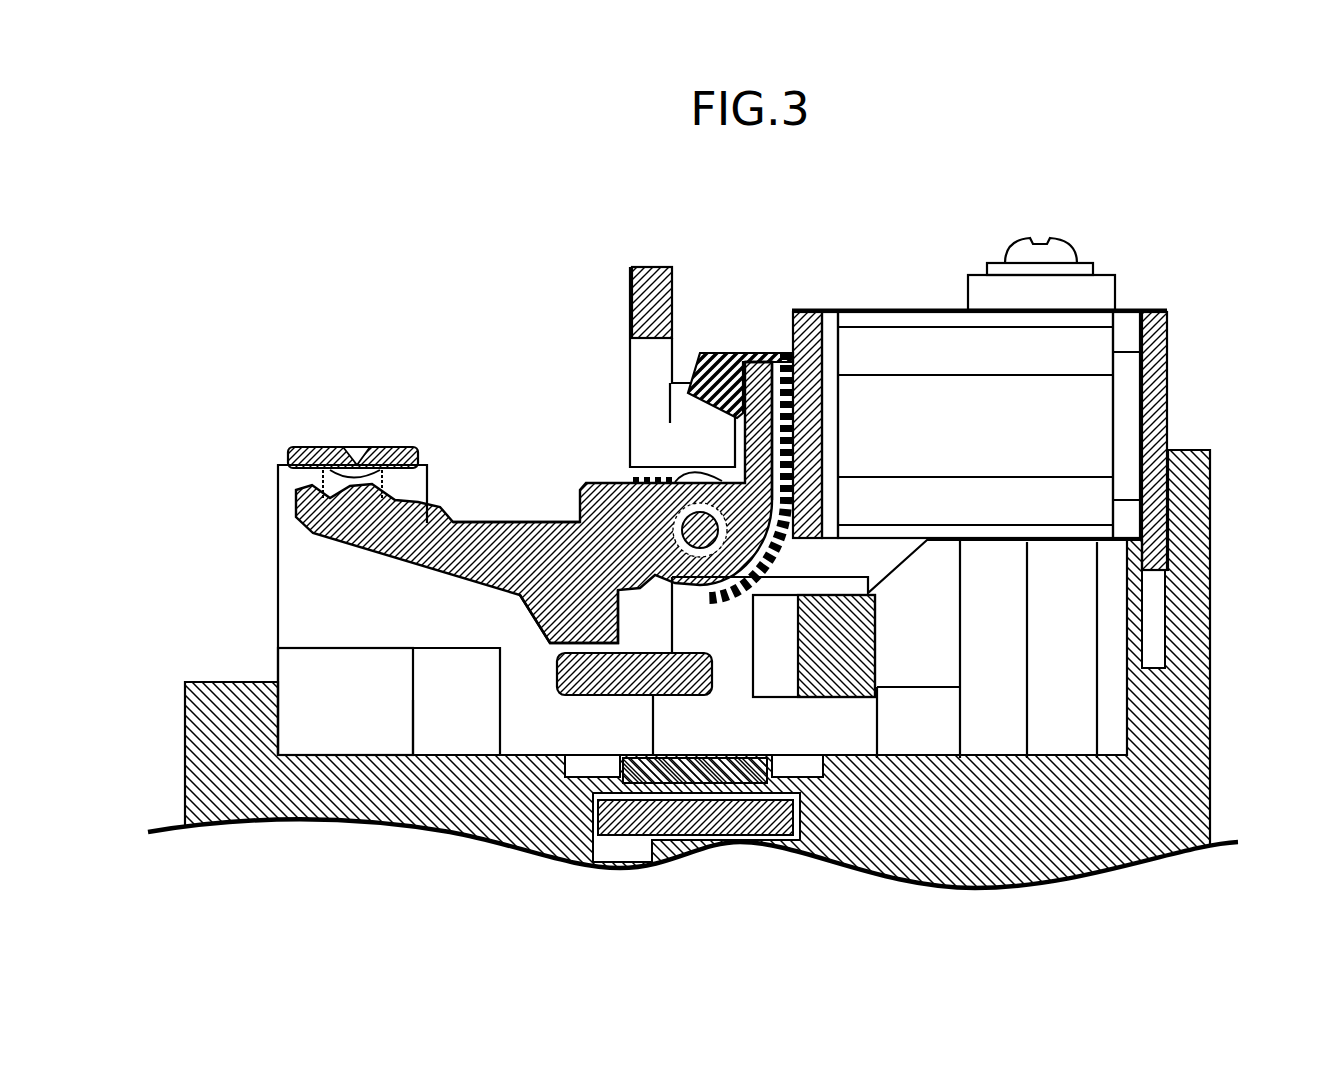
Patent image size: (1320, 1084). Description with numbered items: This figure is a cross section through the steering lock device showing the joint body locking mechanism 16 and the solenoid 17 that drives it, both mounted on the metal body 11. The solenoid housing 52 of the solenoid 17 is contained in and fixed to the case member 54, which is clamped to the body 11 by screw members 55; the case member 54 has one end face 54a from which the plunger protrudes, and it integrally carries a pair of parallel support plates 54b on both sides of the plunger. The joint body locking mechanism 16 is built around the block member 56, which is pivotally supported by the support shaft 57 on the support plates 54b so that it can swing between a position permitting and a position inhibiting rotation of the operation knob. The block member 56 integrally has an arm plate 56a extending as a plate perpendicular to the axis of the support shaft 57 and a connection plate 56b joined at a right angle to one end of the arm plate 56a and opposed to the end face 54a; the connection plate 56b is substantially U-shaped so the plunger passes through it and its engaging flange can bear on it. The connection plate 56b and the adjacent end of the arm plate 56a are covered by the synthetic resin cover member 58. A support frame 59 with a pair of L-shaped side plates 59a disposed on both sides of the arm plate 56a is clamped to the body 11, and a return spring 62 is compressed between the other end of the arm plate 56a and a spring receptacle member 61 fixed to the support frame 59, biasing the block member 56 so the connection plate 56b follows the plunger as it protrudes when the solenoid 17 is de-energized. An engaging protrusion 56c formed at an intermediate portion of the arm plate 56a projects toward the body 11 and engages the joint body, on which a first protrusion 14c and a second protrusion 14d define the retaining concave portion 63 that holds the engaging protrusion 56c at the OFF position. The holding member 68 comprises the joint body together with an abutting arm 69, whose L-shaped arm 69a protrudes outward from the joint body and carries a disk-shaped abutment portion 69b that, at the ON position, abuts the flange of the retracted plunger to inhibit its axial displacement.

The body 11 is at (1185, 723).
The first protrusion 14c is at (850, 638).
The second protrusion 14d is at (610, 680).
The joint body locking mechanism 16 is at (544, 662).
The solenoid 17 is at (931, 302).
The solenoid housing 52 is at (984, 439).
The case member 54 is at (1163, 313).
The one end face 54a is at (777, 357).
The support plate 54b is at (770, 560).
The screw member 55 is at (1060, 252).
The block member 56 is at (543, 512).
The arm plate 56a is at (483, 528).
The connection plate 56b is at (765, 362).
The engaging protrusion 56c is at (545, 635).
The support shaft 57 is at (695, 552).
The cover member 58 is at (717, 360).
The support frame 59 is at (277, 577).
The side plate 59a is at (453, 610).
The spring receptacle member 61 is at (312, 447).
The return spring 62 is at (323, 472).
The retaining concave portion for the OFF position 63 is at (713, 677).
The holding member 68 is at (626, 256).
The abutting arm 69 is at (527, 252).
The arm 69a is at (637, 295).
The abutment portion 69b is at (680, 408).